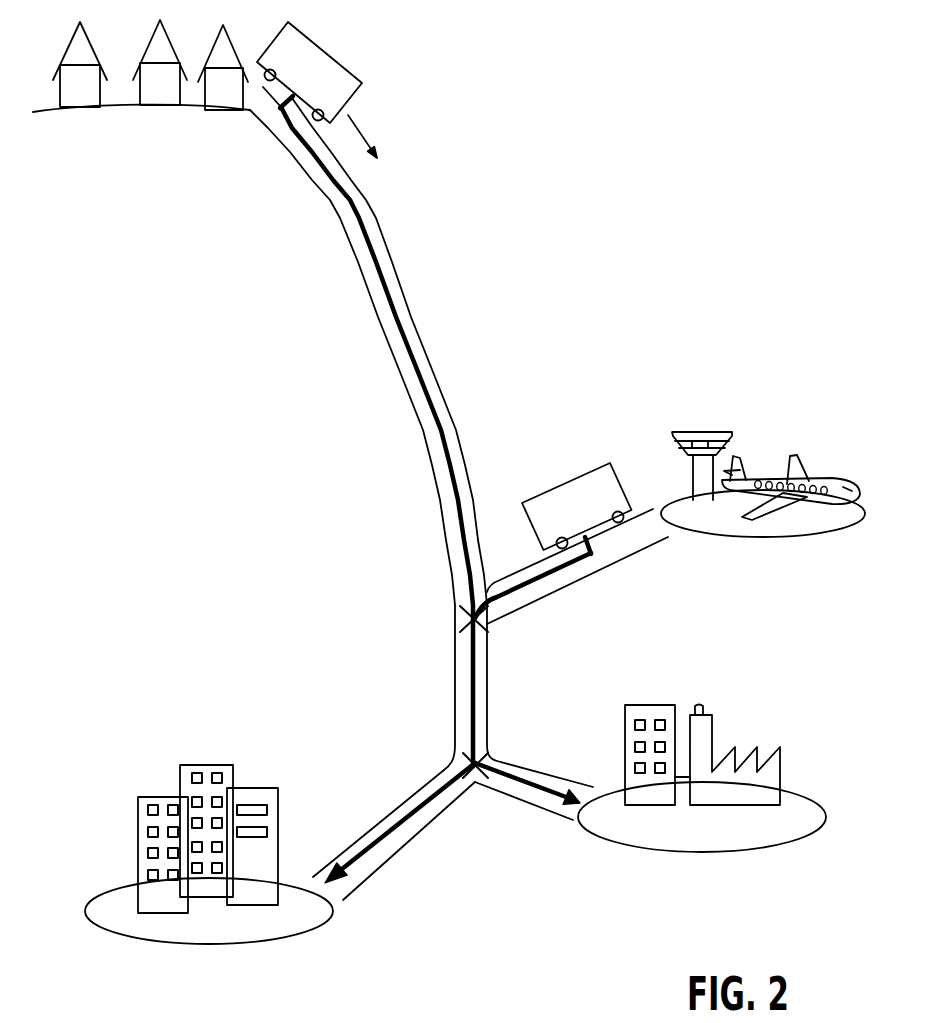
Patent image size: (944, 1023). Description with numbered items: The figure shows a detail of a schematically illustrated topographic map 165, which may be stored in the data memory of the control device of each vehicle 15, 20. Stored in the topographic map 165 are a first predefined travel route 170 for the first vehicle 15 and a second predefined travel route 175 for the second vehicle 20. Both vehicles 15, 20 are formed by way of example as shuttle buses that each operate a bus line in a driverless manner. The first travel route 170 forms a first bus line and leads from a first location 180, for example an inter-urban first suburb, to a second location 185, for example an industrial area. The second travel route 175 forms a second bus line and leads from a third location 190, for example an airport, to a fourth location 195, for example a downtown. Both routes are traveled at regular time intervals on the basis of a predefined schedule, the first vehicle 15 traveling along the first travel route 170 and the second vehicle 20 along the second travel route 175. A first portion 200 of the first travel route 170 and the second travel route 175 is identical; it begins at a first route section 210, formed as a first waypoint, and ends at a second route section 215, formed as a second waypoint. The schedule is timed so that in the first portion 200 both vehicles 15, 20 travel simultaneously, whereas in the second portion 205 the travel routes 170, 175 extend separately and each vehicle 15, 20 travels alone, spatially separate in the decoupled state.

The first vehicle 15 is at (308, 52).
The second vehicle 20 is at (590, 480).
The topographic map 165 is at (553, 122).
The first travel route 170 is at (382, 263).
The second travel route 175 is at (527, 574).
The first location 180 is at (122, 107).
The second location 185 is at (713, 832).
The third location 190 is at (787, 523).
The fourth location 195 is at (200, 928).
The first portion 200 is at (436, 622).
The second portion 205 is at (337, 905).
The first route section 210 is at (472, 618).
The second route section 215 is at (455, 766).